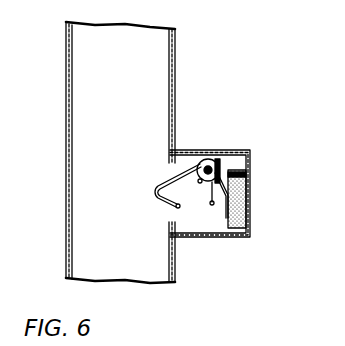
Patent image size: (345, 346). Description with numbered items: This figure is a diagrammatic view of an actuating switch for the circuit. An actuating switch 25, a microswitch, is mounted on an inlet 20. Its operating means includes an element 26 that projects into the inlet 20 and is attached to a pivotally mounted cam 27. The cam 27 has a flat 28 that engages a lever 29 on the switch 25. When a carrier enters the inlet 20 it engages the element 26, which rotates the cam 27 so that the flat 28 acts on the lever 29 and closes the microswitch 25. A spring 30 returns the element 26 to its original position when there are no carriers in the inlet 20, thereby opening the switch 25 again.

The inlet 20 is at (175, 71).
The actuating switch 25 is at (240, 199).
The element 26 is at (163, 183).
The cam 27 is at (207, 185).
The flat 28 is at (226, 151).
The lever 29 is at (224, 176).
The spring 30 is at (209, 152).